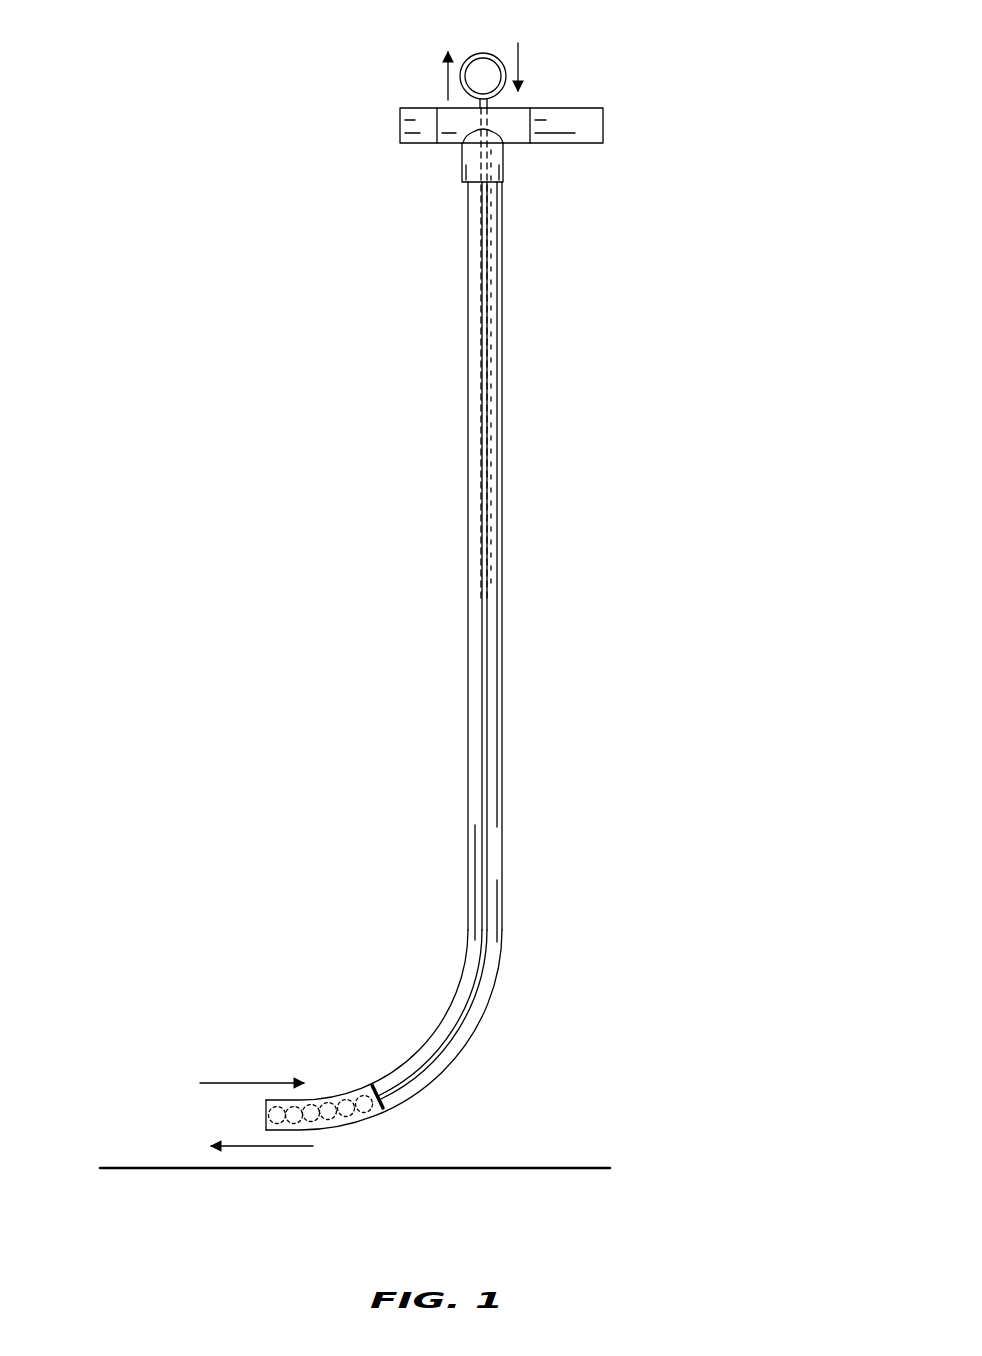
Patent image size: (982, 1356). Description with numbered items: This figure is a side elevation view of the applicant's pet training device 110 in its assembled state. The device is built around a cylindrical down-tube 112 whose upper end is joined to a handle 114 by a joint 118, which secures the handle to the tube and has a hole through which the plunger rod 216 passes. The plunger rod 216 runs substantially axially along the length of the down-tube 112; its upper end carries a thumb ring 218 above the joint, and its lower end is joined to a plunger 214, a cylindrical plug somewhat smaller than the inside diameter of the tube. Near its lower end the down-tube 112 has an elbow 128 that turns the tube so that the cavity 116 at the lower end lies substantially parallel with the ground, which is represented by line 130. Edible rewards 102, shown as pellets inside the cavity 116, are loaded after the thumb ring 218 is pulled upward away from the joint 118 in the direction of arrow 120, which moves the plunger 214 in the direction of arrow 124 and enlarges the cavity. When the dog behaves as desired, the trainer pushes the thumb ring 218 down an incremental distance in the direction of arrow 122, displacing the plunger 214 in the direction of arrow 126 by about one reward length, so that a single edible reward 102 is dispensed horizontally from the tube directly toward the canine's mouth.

The edible rewards 102 is at (264, 1110).
The pet training device 110 is at (406, 580).
The down-tube 112 is at (470, 605).
The handle 114 is at (605, 132).
The cavity 116 is at (266, 1127).
The joint 118 is at (462, 137).
The arrow 120 is at (446, 71).
The arrow 122 is at (522, 73).
The arrow 124 is at (265, 1083).
The arrow 126 is at (267, 1148).
The elbow 128 is at (482, 1025).
The line 130 is at (525, 1165).
The plunger 214 is at (374, 1088).
The plunger rod 216 is at (482, 463).
The thumb ring 218 is at (483, 53).